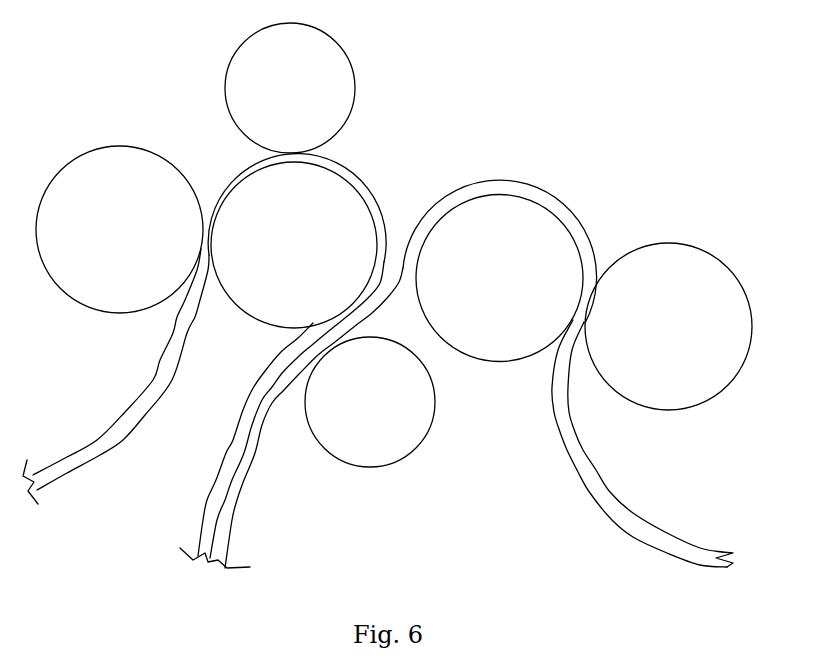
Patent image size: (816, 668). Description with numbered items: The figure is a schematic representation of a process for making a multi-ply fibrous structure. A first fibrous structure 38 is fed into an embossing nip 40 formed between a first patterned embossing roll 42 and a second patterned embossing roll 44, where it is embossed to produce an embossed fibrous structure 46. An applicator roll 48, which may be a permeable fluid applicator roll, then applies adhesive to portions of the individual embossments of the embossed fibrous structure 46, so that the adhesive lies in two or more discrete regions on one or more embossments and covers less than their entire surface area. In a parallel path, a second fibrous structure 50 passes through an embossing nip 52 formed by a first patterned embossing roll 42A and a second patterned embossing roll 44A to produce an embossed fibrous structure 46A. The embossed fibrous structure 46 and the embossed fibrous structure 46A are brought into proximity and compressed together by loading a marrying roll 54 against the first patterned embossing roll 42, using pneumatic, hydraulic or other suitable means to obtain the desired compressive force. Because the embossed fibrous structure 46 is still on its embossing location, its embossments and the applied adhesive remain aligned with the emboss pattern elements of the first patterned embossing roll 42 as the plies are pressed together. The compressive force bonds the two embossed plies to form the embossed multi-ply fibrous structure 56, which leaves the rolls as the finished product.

The first fibrous structure 38 is at (108, 446).
The embossing nip 40 is at (216, 335).
The first patterned embossing roll 42 is at (280, 250).
The first patterned embossing roll 42A is at (486, 285).
The second patterned embossing roll 44 is at (106, 241).
The second patterned embossing roll 44A is at (655, 340).
The embossed fibrous structure 46 is at (238, 173).
The embossed fibrous structure 46A is at (543, 196).
The applicator roll 48 is at (278, 97).
The second fibrous structure 50 is at (614, 518).
The embossing nip 52 is at (538, 376).
The marrying roll 54 is at (353, 417).
The embossed multi-ply fibrous structure 56 is at (197, 517).